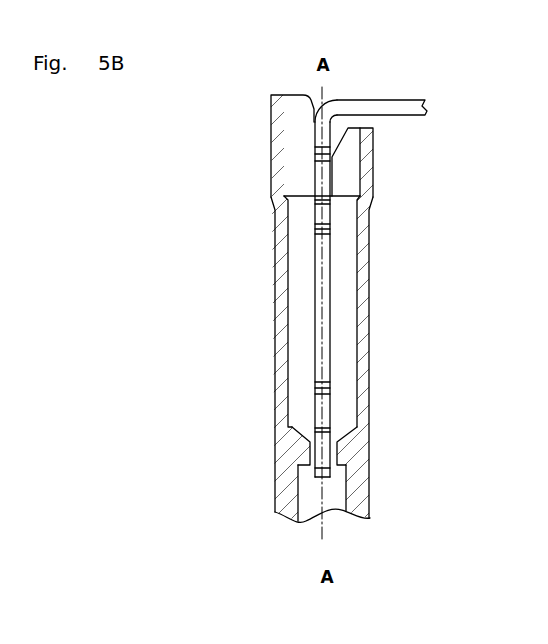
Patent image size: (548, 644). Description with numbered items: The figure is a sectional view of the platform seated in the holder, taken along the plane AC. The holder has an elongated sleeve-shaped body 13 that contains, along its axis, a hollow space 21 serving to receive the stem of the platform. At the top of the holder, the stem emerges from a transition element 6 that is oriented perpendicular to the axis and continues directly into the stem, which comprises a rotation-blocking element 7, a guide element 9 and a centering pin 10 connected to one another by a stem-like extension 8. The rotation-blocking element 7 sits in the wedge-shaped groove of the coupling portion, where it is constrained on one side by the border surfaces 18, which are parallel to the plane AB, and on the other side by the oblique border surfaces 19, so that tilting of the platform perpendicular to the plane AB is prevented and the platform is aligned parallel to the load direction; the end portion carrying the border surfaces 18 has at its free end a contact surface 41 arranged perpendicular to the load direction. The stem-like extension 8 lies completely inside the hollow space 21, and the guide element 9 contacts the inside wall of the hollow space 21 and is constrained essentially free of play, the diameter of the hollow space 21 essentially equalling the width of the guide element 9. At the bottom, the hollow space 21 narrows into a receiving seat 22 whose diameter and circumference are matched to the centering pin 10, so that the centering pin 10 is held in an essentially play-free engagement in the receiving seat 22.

The transition element 6 is at (400, 105).
The rotation-blocking element 7 is at (317, 175).
The stem-like extension 8 is at (322, 300).
The guide element 9 is at (323, 213).
The centering pin 10 is at (322, 452).
The elongated sleeve-shaped body 13 is at (282, 345).
The border surfaces 18 is at (321, 106).
The border surfaces 19 is at (335, 145).
The hollow space 21 is at (300, 300).
The receiving seat 22 is at (338, 450).
The contact surface 41 is at (287, 96).